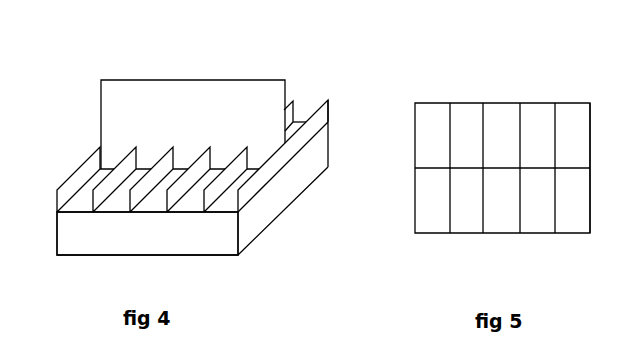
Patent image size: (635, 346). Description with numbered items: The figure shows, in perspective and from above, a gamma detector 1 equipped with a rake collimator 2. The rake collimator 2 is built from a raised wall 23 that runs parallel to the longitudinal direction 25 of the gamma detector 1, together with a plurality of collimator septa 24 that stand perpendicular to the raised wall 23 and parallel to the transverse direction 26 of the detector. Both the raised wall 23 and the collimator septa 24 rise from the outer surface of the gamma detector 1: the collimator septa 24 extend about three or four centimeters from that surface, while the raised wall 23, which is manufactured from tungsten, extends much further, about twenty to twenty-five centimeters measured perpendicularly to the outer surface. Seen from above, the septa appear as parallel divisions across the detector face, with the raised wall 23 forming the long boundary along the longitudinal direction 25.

In FIG. 4, the gamma detector 1 is at (147, 233).
In FIG. 4, the rake collimator 2 is at (192, 166).
In FIG. 5, the rake collimator 2 is at (510, 187).
In FIG. 4, the raised wall 23 is at (208, 90).
In FIG. 5, the raised wall 23 is at (493, 164).
In FIG. 4, the collimator septa 24 is at (66, 192).
In FIG. 5, the collimator septa 24 is at (481, 213).
In FIG. 4, the longitudinal direction 25 is at (192, 196).
In FIG. 5, the longitudinal direction 25 is at (502, 187).
In FIG. 4, the transverse direction 26 is at (283, 168).
In FIG. 5, the transverse direction 26 is at (612, 168).